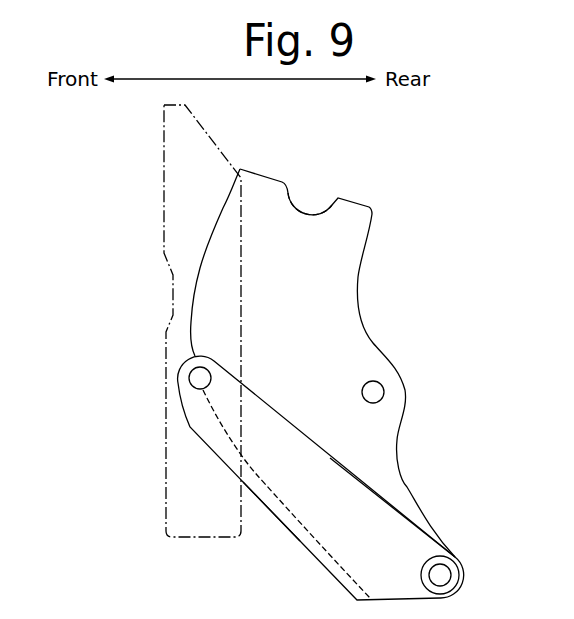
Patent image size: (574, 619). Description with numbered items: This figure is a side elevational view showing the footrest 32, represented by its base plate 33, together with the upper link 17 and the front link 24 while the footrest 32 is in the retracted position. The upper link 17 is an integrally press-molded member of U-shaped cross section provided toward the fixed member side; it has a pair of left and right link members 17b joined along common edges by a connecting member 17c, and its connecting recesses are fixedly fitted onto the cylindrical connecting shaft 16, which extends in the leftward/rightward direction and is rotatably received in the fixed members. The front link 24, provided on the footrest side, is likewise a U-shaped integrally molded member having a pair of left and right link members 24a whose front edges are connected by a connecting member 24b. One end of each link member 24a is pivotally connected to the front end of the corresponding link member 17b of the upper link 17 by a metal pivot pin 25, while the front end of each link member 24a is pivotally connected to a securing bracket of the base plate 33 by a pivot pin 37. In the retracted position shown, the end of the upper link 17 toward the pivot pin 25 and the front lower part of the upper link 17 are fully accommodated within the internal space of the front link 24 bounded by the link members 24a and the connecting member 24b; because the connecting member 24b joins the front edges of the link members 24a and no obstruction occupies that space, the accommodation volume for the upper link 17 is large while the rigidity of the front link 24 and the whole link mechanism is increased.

The connecting shaft 16 is at (324, 193).
The upper link 17 is at (348, 320).
The link member 17b is at (367, 370).
The connecting member 17c is at (237, 447).
The front link 24 is at (303, 538).
The link member 24a is at (382, 520).
The connecting member 24b is at (273, 518).
The pivot pin 25 is at (443, 573).
The pivot pin 37 is at (190, 378).
The base plate 33 is at (163, 234).
The footrest 32 is at (129, 321).